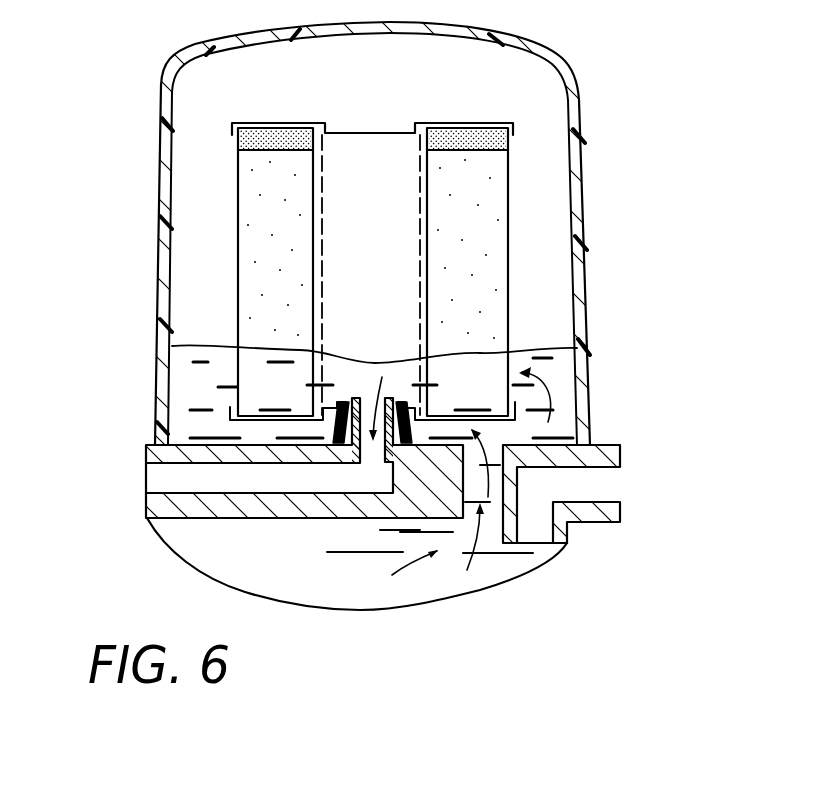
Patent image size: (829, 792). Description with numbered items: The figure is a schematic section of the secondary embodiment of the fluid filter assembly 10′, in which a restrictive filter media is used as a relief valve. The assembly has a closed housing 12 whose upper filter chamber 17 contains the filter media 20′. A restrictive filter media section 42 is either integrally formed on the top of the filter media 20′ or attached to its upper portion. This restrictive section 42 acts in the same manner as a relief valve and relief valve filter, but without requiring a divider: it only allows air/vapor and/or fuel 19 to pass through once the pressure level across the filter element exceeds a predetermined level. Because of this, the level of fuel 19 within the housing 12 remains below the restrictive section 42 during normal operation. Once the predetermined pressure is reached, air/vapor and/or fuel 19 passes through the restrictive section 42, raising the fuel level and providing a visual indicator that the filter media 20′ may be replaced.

The fluid filter assembly 10′ is at (600, 224).
The housing 12 is at (150, 383).
The upper filter chamber 17 is at (587, 261).
The fuel 19 is at (556, 372).
The filter media 20′ is at (492, 300).
The restrictive filter media section 42 is at (492, 138).